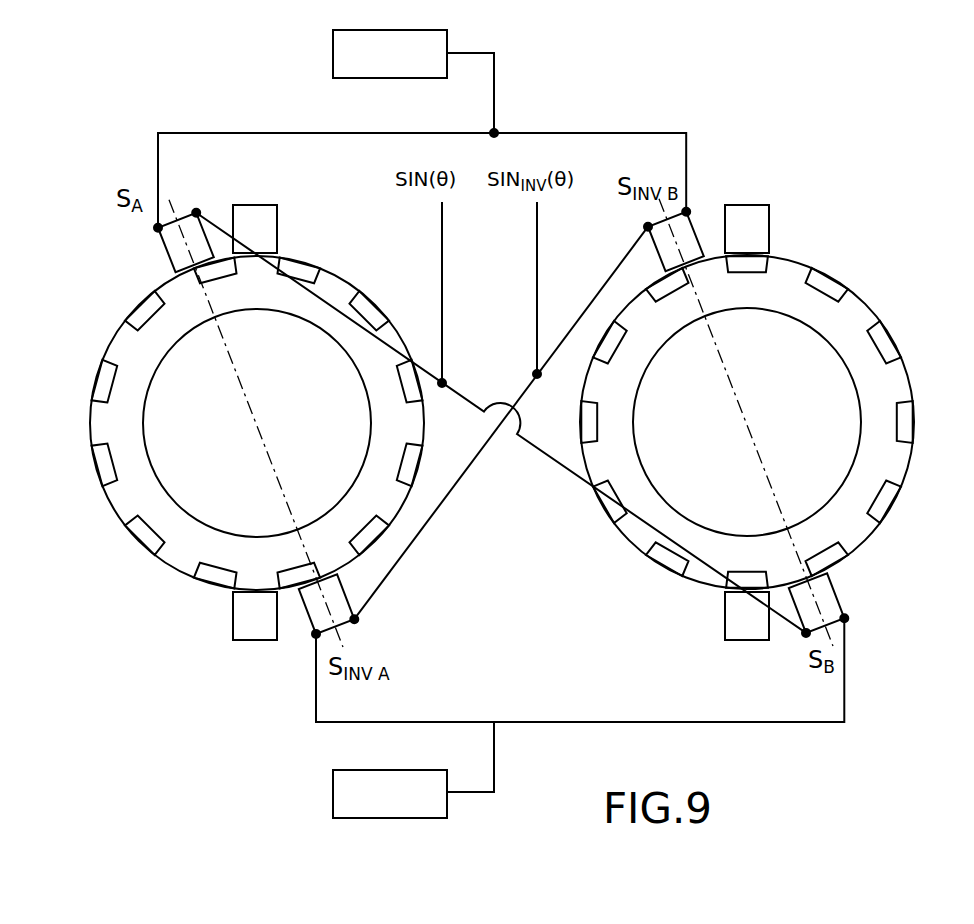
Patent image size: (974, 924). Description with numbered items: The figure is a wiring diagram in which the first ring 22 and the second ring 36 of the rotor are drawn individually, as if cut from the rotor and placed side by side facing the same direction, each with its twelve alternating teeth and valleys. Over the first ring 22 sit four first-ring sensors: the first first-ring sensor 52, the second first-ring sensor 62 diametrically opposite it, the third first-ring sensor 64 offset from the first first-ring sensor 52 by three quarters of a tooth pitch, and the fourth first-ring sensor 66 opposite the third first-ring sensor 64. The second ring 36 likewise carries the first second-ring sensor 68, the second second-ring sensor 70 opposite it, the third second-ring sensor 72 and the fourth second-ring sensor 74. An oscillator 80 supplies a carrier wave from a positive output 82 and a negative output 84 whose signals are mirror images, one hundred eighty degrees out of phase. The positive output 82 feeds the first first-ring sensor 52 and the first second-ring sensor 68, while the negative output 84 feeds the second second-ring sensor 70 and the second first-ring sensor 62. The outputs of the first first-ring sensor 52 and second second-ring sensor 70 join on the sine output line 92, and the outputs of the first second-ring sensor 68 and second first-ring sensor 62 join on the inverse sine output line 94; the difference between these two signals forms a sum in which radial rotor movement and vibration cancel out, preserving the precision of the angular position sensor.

The first ring 22 is at (137, 492).
The second ring 36 is at (897, 463).
The first first-ring sensor 52 is at (167, 249).
The second first-ring sensor 62 is at (307, 617).
The third first-ring sensor 64 is at (277, 230).
The fourth first-ring sensor 66 is at (233, 622).
The first second-ring sensor 68 is at (694, 236).
The second second-ring sensor 70 is at (836, 597).
The third second-ring sensor 72 is at (769, 228).
The fourth second-ring sensor 74 is at (725, 627).
The oscillator 80 is at (333, 52).
The positive output 82 is at (447, 48).
The negative output 84 is at (447, 797).
The sine output line 92 is at (543, 452).
The inverse sine output line 94 is at (425, 523).